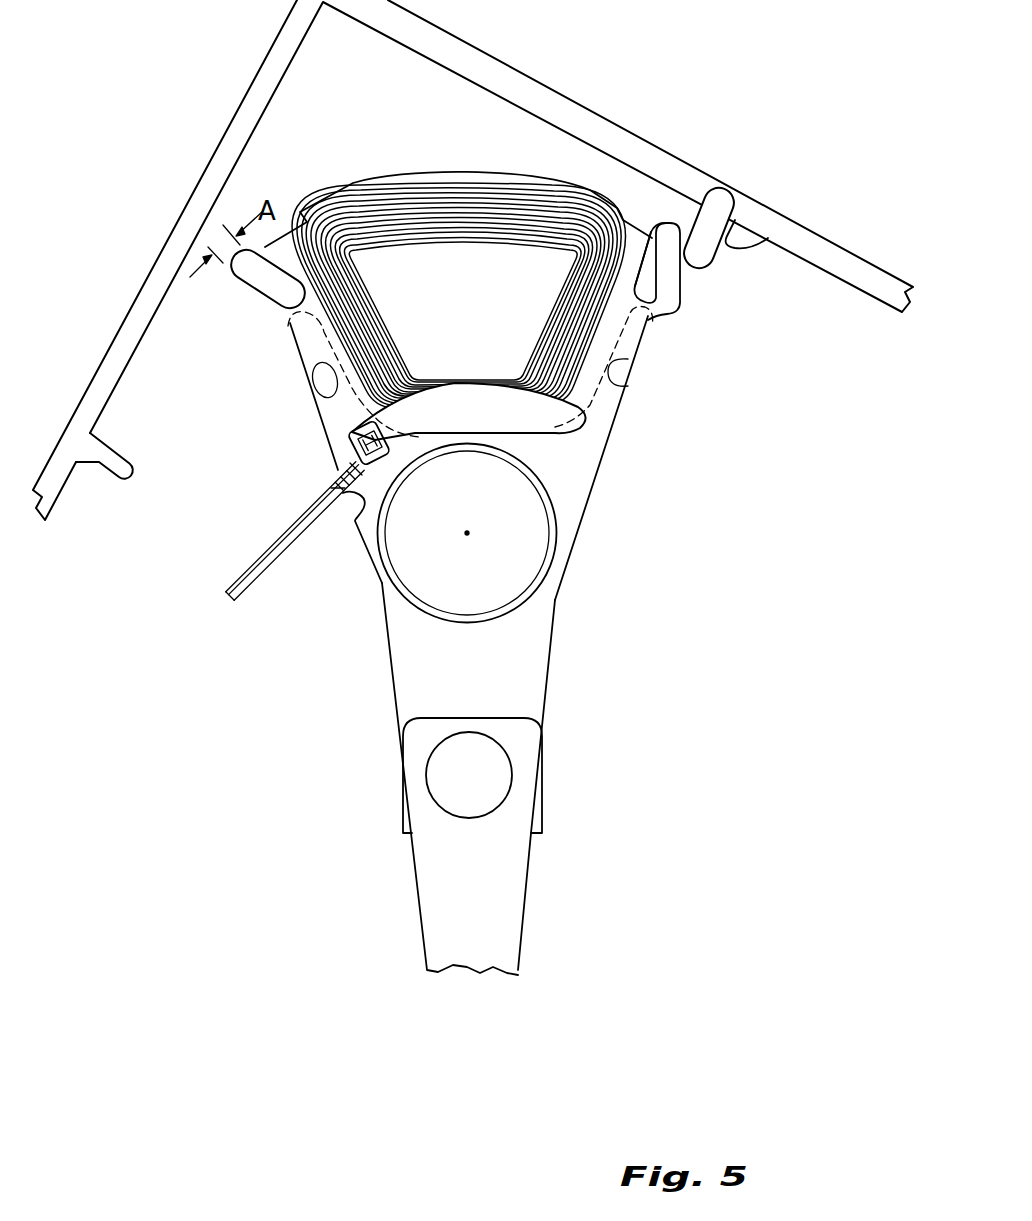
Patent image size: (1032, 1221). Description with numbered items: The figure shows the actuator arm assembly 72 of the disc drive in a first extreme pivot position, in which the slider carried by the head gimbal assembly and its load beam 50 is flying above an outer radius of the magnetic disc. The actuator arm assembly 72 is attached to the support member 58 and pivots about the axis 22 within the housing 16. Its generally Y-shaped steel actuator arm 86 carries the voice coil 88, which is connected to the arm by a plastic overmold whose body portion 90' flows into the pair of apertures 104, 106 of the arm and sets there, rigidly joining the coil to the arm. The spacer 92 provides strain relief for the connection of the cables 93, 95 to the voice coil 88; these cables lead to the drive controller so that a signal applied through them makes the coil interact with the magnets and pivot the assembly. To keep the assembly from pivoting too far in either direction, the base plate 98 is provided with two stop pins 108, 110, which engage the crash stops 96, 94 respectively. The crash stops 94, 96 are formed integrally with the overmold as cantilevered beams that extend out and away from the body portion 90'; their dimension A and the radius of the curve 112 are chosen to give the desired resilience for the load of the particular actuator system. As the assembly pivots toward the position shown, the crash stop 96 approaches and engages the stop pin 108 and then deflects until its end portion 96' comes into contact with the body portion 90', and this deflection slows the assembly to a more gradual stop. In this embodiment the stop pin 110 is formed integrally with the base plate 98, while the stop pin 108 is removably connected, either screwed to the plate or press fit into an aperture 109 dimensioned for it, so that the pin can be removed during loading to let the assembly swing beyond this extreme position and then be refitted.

The housing 16 is at (606, 114).
The base plate 98 is at (366, 68).
The stop pin 110 is at (100, 465).
The aperture 109 is at (768, 236).
The stop pin 108 is at (706, 250).
The crash stop 94 is at (250, 287).
The actuator arm assembly 72 is at (458, 259).
The body portion of overmold 90' is at (458, 195).
The voice coil 88 is at (443, 185).
The spacer 92 is at (482, 416).
The curve 112 is at (290, 323).
The actuator arm 86 is at (508, 372).
The aperture 106 is at (320, 410).
The aperture 104 is at (622, 380).
The crash stop 96 is at (683, 283).
The end portion of crash stop 96' is at (704, 215).
The axis 22 is at (467, 533).
The support member 58 is at (530, 668).
The load beam 50 is at (505, 897).
The cable 93 is at (240, 578).
The cable 95 is at (240, 603).